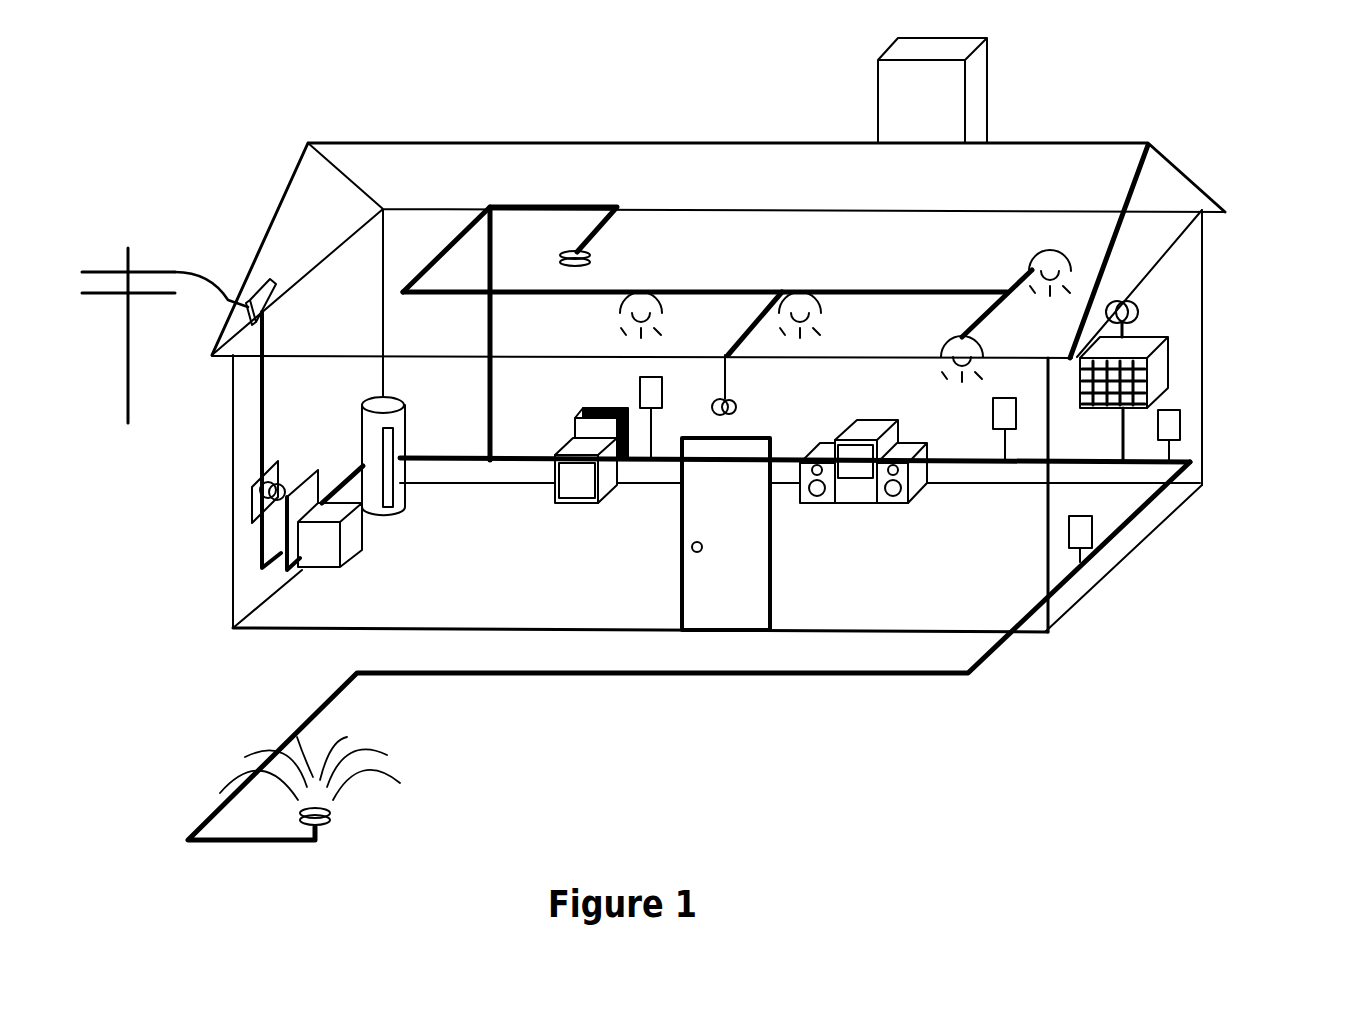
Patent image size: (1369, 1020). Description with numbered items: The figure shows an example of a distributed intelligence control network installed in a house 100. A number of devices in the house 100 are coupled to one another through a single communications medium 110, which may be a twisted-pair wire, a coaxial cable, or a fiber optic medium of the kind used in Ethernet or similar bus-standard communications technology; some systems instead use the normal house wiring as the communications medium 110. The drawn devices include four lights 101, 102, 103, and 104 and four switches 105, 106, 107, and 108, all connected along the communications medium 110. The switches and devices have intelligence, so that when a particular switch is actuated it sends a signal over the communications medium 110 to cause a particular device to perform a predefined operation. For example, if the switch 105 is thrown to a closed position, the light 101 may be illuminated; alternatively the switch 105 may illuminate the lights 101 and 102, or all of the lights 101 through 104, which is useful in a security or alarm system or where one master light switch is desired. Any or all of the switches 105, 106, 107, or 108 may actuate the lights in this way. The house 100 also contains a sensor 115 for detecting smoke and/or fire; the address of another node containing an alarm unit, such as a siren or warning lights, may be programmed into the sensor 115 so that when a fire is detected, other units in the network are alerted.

The house 100 is at (1170, 160).
The light 101 is at (642, 292).
The light 102 is at (800, 293).
The light 103 is at (950, 340).
The light 104 is at (1040, 252).
The switch 105 is at (640, 388).
The switch 106 is at (993, 415).
The switch 107 is at (1180, 424).
The switch 108 is at (1069, 526).
The communications medium 110 is at (1152, 504).
The smoke and/or fire sensor 115 is at (565, 252).